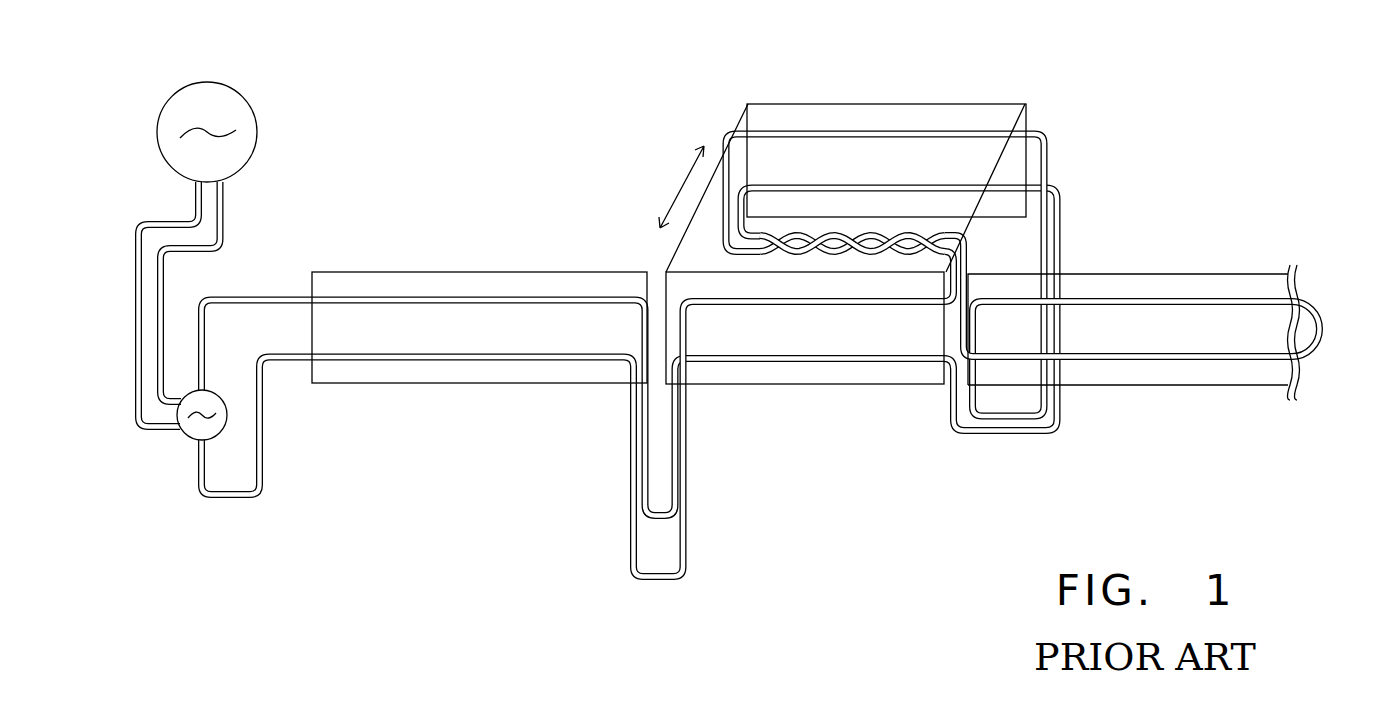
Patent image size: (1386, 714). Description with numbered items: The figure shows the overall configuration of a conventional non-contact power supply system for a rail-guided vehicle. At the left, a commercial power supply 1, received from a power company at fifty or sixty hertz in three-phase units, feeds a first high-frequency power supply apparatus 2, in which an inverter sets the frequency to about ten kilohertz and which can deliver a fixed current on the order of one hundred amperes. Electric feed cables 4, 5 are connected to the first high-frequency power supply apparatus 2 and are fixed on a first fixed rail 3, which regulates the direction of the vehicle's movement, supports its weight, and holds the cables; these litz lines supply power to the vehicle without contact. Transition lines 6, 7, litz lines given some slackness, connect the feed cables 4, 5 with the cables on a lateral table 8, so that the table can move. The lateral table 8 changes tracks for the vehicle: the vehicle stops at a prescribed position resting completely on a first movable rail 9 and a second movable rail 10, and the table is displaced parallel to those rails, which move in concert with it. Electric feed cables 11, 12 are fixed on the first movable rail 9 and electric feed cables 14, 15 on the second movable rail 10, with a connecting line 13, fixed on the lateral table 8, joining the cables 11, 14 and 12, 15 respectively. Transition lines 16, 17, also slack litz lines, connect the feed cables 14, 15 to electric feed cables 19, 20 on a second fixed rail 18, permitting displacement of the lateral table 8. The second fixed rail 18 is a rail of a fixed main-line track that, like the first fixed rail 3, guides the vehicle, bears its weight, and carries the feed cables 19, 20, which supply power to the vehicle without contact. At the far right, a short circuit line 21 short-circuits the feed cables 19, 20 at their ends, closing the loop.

The commercial power supply 1 is at (249, 103).
The first high-frequency power supply apparatus 2 is at (190, 437).
The first fixed rail 3 is at (370, 270).
The electric feed cable 4 is at (438, 297).
The electric feed cable 5 is at (430, 362).
The transition line 6 is at (688, 507).
The transition line 7 is at (677, 563).
The lateral table 8 is at (737, 135).
The first movable rail 9 is at (738, 385).
The second movable rail 10 is at (1030, 123).
The electric feed cable 11 is at (818, 305).
The electric feed cable 12 is at (878, 362).
The connecting line 13 is at (760, 247).
The electric feed cable 14 is at (827, 125).
The electric feed cable 15 is at (922, 187).
The transition line 16 is at (998, 417).
The transition line 17 is at (1048, 425).
The second fixed rail 18 is at (1125, 275).
The electric feed cable 19 is at (1186, 298).
The electric feed cable 20 is at (1236, 362).
The short circuit line 21 is at (1320, 312).